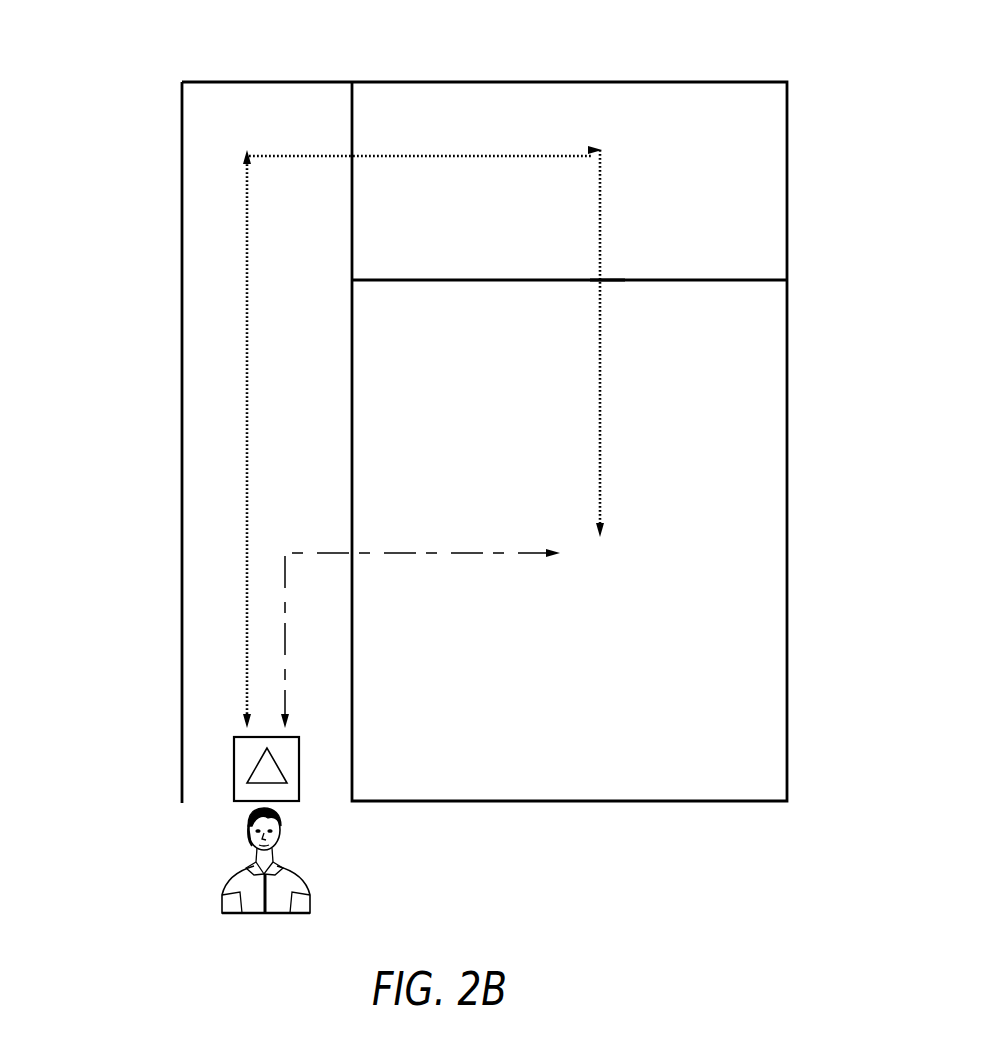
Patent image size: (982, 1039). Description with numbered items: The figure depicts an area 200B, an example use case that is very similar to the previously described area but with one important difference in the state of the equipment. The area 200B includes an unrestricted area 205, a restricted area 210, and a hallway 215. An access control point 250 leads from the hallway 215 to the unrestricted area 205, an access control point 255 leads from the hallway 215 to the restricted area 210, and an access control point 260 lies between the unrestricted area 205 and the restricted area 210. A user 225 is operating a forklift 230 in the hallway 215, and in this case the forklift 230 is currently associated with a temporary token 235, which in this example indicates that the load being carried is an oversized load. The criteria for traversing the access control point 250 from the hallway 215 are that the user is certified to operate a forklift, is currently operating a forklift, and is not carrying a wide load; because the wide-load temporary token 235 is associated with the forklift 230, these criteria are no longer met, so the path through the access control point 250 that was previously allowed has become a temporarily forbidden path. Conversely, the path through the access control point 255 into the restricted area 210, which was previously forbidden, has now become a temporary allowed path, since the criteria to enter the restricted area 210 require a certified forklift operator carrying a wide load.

The area 200B is at (105, 24).
The unrestricted area 205 is at (773, 353).
The restricted area 210 is at (773, 178).
The hallway 215 is at (197, 152).
The user 225 is at (222, 878).
The forklift 230 is at (234, 737).
The temporary token 235 is at (253, 770).
The access control point 250 is at (352, 520).
The access control point 255 is at (352, 120).
The access control point 260 is at (617, 280).